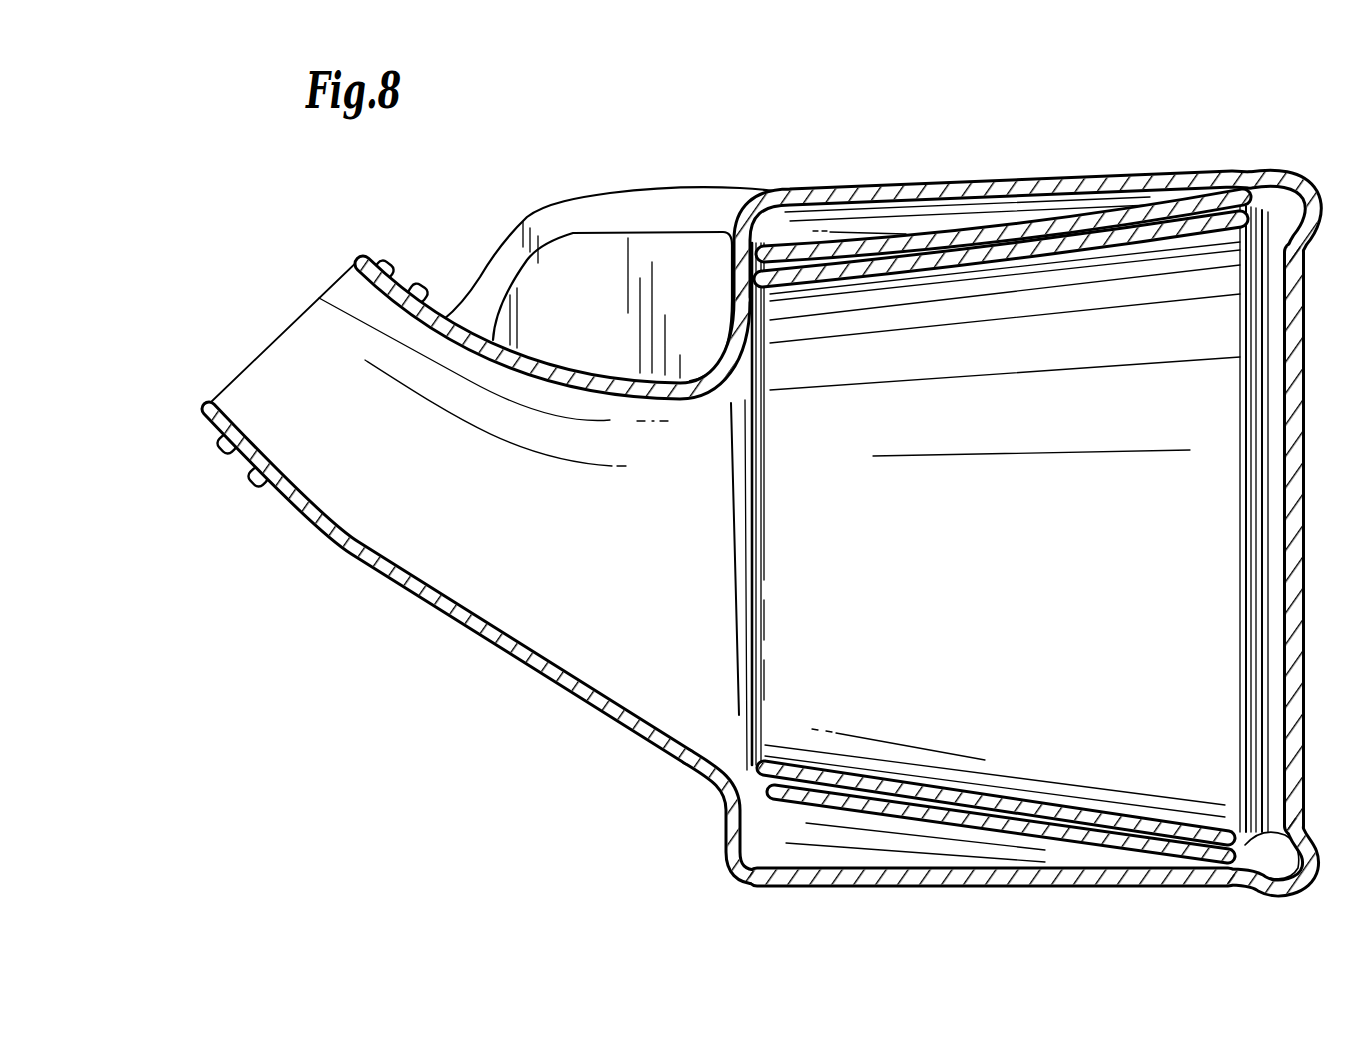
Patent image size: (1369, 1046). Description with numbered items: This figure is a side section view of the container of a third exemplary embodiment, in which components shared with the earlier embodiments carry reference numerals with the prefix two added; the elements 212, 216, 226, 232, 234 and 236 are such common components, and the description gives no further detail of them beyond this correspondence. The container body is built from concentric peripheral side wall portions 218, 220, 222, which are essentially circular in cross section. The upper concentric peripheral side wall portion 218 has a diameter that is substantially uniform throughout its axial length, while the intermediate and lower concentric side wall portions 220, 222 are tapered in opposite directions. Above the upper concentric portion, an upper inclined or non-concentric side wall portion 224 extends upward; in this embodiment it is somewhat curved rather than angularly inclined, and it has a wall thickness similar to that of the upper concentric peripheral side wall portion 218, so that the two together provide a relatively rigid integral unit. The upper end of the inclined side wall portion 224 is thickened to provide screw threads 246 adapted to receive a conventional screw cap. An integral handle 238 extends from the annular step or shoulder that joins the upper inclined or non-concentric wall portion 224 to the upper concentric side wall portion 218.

The housing 212 is at (1302, 530).
The spout tube 216 is at (300, 352).
The upper concentric peripheral side wall portion 218 is at (918, 872).
The intermediate concentric side wall portion 220 is at (990, 848).
The lower concentric side wall portion 222 is at (1187, 788).
The upper inclined or non-concentric side wall portion 224 is at (477, 660).
The tube end edge 226 is at (203, 402).
The corner wall 232 is at (723, 810).
The rim bead 234 is at (1224, 870).
The inner wall 236 is at (728, 740).
The integral handle 238 is at (630, 217).
The screw threads 246 is at (258, 488).